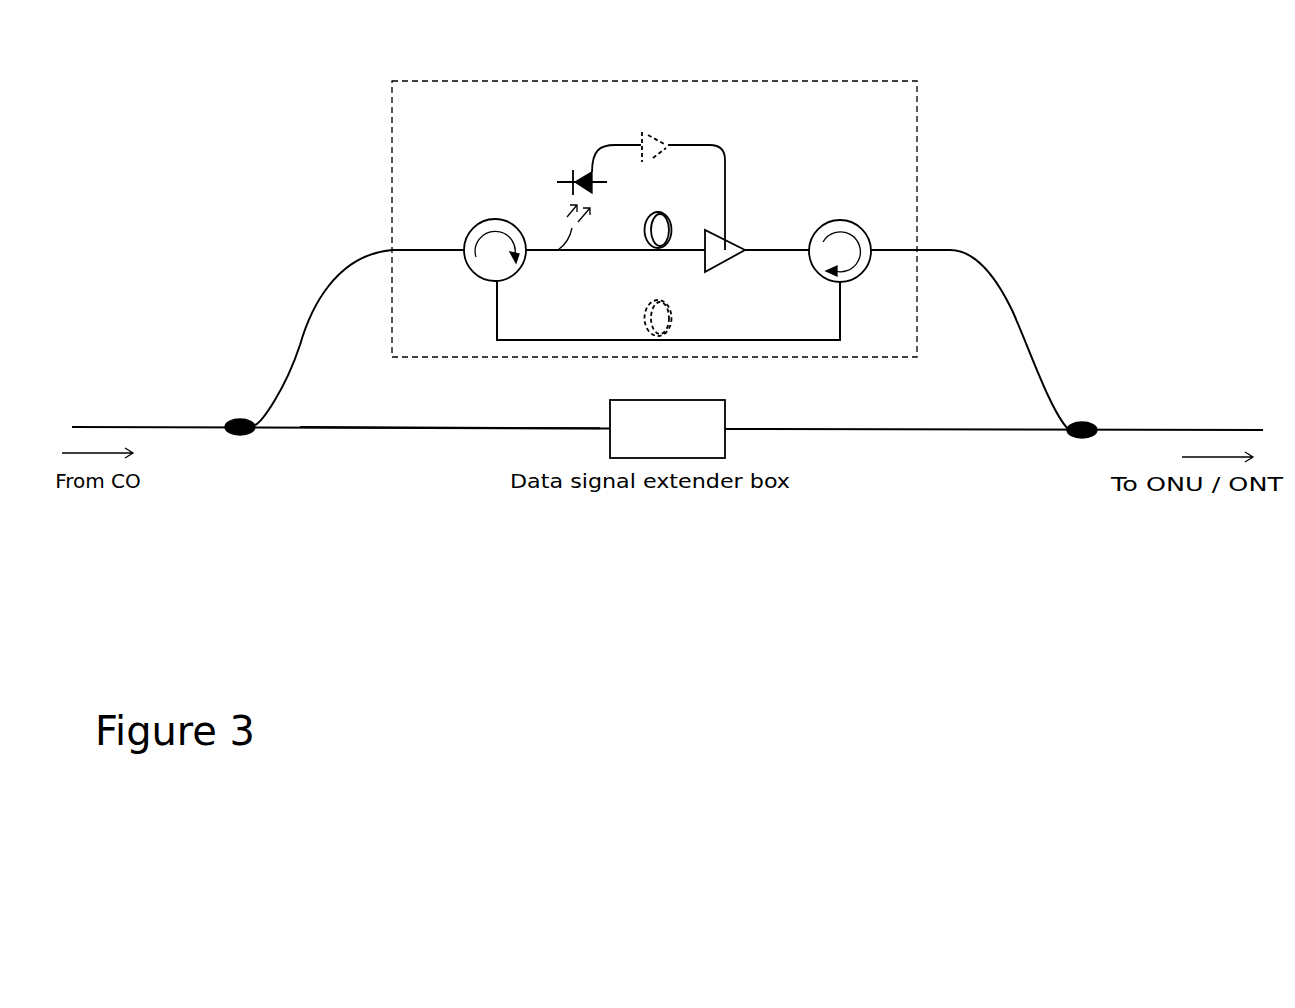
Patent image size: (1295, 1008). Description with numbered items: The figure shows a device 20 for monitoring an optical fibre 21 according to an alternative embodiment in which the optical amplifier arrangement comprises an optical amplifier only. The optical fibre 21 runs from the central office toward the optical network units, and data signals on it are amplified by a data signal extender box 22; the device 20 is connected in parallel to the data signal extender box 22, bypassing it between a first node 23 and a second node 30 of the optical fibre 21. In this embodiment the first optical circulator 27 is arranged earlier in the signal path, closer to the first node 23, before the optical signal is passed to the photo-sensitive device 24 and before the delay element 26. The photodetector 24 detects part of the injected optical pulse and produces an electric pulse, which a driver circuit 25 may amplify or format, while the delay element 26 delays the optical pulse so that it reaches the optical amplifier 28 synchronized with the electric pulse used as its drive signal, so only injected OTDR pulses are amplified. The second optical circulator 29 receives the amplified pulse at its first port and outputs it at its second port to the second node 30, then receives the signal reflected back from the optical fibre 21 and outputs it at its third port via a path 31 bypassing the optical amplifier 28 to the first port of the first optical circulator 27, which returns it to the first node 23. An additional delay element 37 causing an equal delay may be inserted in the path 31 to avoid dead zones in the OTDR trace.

The device for monitoring an optical fibre 20 is at (905, 135).
The optical fibre 21 is at (398, 427).
The data signal extender box 22 is at (667, 429).
The first node 23 is at (257, 433).
The photo-sensitive device 24 is at (562, 182).
The driver circuit 25 is at (672, 133).
The delay element 26 is at (625, 260).
The first optical circulator 27 is at (477, 218).
The optical amplifier 28 is at (737, 242).
The second optical circulator 29 is at (838, 218).
The second node 30 is at (1070, 438).
The path 31 is at (553, 340).
The additional delay element 37 is at (643, 332).